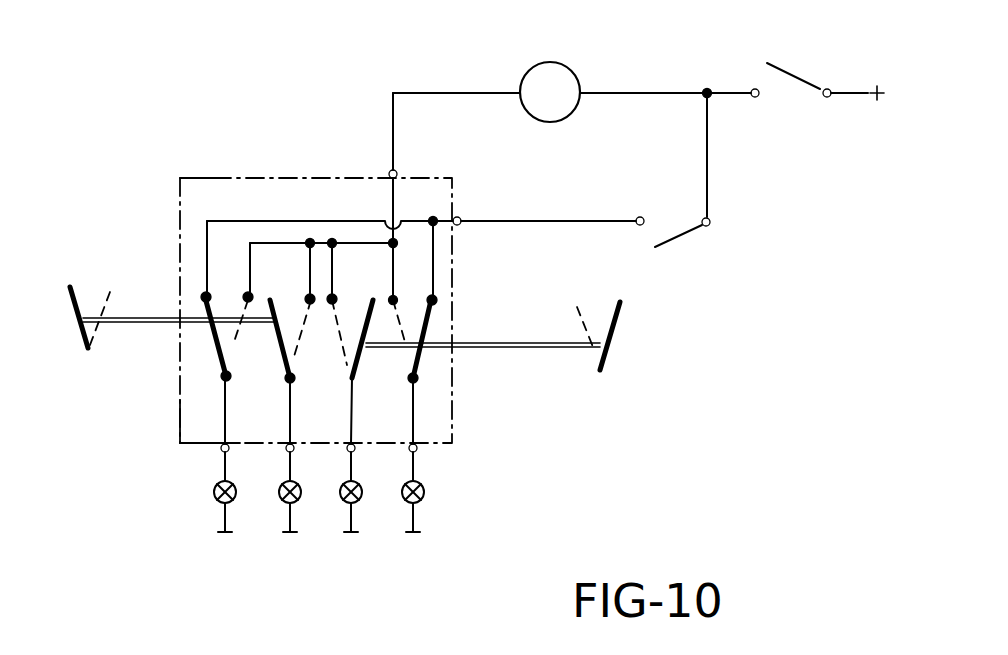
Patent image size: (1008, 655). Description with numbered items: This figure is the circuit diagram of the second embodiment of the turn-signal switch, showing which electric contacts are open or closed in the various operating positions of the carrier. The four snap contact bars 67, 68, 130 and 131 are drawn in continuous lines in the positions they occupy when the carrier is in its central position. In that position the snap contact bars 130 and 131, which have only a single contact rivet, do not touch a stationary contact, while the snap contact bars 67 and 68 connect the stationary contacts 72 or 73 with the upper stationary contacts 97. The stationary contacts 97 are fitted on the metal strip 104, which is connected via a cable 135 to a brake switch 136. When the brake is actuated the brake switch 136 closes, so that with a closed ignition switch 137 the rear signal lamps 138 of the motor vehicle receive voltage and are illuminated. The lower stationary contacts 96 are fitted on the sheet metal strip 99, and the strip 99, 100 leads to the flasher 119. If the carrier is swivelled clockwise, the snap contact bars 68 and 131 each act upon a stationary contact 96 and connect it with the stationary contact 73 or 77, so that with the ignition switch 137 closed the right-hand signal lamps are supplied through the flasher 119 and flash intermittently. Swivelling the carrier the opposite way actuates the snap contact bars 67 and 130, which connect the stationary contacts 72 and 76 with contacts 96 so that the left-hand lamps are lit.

The snap contact bar 67 is at (222, 355).
The snap contact bar 68 is at (428, 338).
The stationary contact 72 is at (220, 377).
The stationary contact 73 is at (416, 379).
The stationary contact 76 is at (290, 380).
The stationary contact 77 is at (352, 380).
The lower stationary contact 96 is at (247, 297).
The upper stationary contact 97 is at (205, 297).
The sheet metal strip 99 is at (324, 195).
The conductor 100 is at (290, 243).
The metal strip 104 is at (220, 219).
The flasher 119 is at (531, 72).
The snap contact bar 130 is at (287, 373).
The snap contact bar 131 is at (369, 348).
The cable 135 is at (478, 220).
The brake switch 136 is at (717, 250).
The ignition switch 137 is at (828, 33).
The rear signal lamps 138 is at (215, 496).